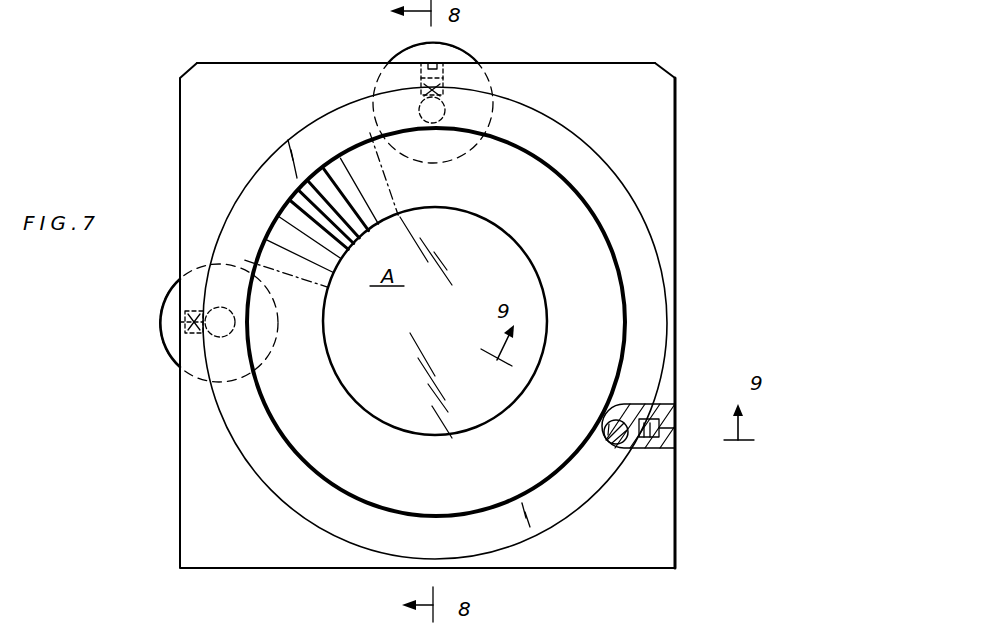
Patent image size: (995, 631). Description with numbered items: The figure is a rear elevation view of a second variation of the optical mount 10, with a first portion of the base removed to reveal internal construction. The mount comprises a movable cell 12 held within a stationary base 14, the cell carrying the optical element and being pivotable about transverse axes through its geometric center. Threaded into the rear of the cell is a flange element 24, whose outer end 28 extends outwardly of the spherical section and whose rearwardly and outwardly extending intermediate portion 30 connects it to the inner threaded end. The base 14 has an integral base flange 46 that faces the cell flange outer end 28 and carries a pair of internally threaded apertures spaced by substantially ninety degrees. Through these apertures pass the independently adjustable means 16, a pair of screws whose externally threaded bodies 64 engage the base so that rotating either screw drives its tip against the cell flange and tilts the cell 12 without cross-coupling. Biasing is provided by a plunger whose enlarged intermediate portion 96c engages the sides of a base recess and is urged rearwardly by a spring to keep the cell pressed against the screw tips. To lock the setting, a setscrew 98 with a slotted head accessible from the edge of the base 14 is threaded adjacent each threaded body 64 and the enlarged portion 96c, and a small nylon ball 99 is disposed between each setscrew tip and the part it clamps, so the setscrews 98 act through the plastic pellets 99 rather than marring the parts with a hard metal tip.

The optical mount 10 is at (692, 92).
The movable cell 12 is at (556, 540).
The stationary base 14 is at (688, 332).
The independently adjustable means 16 is at (470, 48).
The flange element 24 is at (600, 132).
The outer end of flange element 28 is at (603, 184).
The intermediate portion of flange element 30 is at (572, 234).
The base flange 46 is at (303, 63).
The externally threaded body of screw 64 is at (241, 274).
The enlarged intermediate portion of plunger 96c is at (603, 434).
The setscrew 98 is at (180, 335).
The nylon ball 99 is at (178, 370).